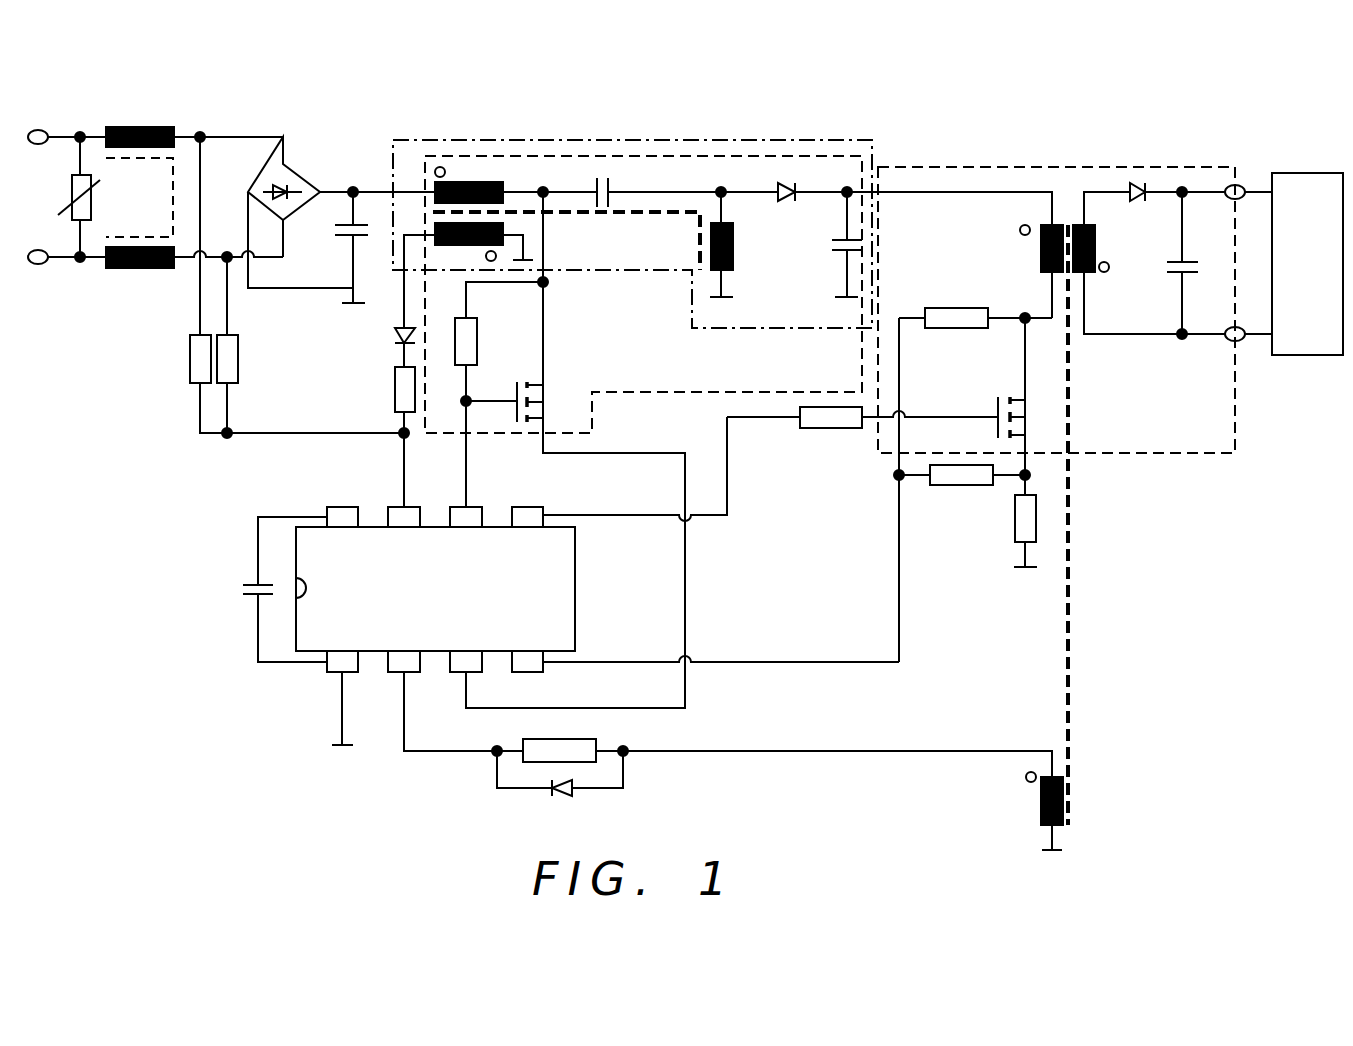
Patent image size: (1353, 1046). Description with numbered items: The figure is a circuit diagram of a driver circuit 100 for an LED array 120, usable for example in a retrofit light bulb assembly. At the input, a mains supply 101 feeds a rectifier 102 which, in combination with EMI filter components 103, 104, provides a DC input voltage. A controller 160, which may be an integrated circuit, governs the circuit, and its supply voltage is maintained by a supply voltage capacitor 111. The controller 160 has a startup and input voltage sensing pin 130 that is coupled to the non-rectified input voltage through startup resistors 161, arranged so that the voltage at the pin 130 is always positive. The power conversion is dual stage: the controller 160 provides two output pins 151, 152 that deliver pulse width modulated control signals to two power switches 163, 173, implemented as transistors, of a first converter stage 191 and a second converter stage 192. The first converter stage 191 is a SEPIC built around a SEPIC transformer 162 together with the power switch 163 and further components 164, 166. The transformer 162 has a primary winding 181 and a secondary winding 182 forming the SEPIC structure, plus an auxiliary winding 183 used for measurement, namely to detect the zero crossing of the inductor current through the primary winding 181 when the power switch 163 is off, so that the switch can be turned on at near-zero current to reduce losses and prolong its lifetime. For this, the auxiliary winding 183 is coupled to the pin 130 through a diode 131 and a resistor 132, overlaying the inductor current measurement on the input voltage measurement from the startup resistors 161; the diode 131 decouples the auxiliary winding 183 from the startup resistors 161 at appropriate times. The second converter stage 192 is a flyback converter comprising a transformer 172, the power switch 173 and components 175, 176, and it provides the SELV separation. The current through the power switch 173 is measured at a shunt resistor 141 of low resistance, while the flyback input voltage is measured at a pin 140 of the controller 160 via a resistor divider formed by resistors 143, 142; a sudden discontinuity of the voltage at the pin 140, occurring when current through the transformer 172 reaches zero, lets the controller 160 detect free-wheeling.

The driver circuit 100 is at (1162, 762).
The mains supply 101 is at (60, 215).
The rectifier 102 is at (305, 180).
The EMI filter component 103 is at (125, 127).
The EMI filter component 104 is at (331, 230).
The supply voltage capacitor 111 is at (240, 592).
The LED array 120 is at (1325, 356).
The startup and input voltage sensing pin 130 is at (408, 507).
The diode 131 is at (395, 338).
The resistor 132 is at (395, 385).
The pin 140 is at (543, 660).
The shunt resistor 141 is at (1036, 515).
The resistor 142 is at (968, 487).
The resistor 143 is at (948, 308).
The output pin 151 is at (473, 507).
The output pin 152 is at (538, 507).
The controller 160 is at (296, 632).
The startup resistors 161 is at (190, 350).
The SEPIC transformer 162 is at (478, 182).
The power switch 163 is at (516, 383).
The component of first converter 164 is at (608, 180).
The component of first converter 166 is at (830, 247).
The transformer 172 is at (1040, 248).
The power switch 173 is at (998, 400).
The component of flyback converter 175 is at (1143, 185).
The component of flyback converter 176 is at (1165, 265).
The primary winding 181 is at (503, 184).
The secondary winding 182 is at (733, 258).
The auxiliary winding 183 is at (505, 226).
The first converter stage 191 is at (678, 156).
The second converter stage 192 is at (955, 167).